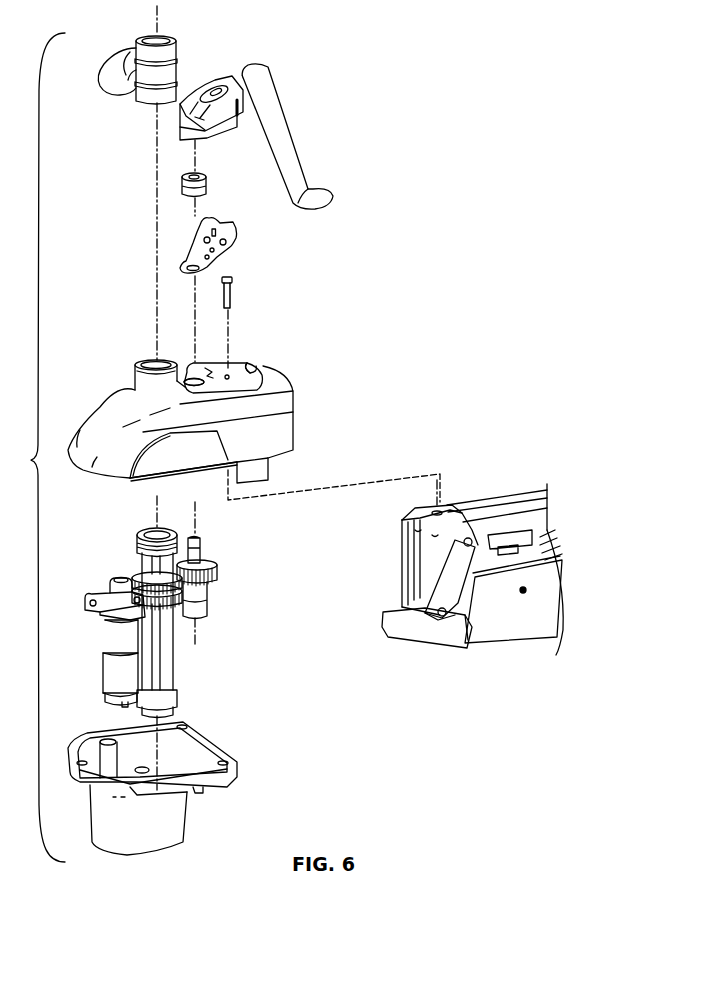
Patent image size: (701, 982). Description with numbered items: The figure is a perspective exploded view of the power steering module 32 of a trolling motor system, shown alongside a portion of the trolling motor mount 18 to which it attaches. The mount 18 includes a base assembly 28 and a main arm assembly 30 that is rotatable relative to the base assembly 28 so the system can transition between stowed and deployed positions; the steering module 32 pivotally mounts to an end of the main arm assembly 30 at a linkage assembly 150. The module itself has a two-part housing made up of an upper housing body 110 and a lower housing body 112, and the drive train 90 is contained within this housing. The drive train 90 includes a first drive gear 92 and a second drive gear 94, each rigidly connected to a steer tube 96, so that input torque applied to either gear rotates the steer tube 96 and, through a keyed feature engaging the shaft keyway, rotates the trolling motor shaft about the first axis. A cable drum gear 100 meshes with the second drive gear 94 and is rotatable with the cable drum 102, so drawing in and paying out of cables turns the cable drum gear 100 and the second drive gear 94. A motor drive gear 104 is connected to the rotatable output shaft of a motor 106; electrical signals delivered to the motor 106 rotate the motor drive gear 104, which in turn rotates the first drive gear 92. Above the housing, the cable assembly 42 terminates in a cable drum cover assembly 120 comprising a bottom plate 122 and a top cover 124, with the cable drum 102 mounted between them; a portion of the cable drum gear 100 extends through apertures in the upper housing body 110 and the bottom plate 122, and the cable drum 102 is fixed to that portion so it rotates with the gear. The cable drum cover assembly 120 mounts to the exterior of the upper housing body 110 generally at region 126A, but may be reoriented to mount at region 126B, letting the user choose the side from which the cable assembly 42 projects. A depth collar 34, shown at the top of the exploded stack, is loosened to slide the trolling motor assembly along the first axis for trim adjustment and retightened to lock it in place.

The mount 18 is at (470, 664).
The base assembly 28 is at (508, 637).
The main arm assembly 30 is at (505, 497).
The power steering module 32 is at (37, 447).
The depth collar 34 is at (130, 48).
The cable assembly 42 is at (288, 92).
The drive train 90 is at (237, 541).
The first drive gear 92 is at (177, 605).
The second drive gear 94 is at (137, 575).
The steer tube 96 is at (167, 653).
The cable drum gear 100 is at (217, 573).
The cable drum 102 is at (209, 184).
The motor drive gear 104 is at (113, 590).
The motor 106 is at (113, 667).
The upper housing body 110 is at (284, 428).
The lower housing body 112 is at (178, 822).
The cable drum cover assembly 120 is at (303, 228).
The bottom plate 122 is at (237, 240).
The top cover 124 is at (199, 88).
The region 126A is at (218, 368).
The region 126B is at (250, 367).
The linkage assembly 150 is at (393, 568).